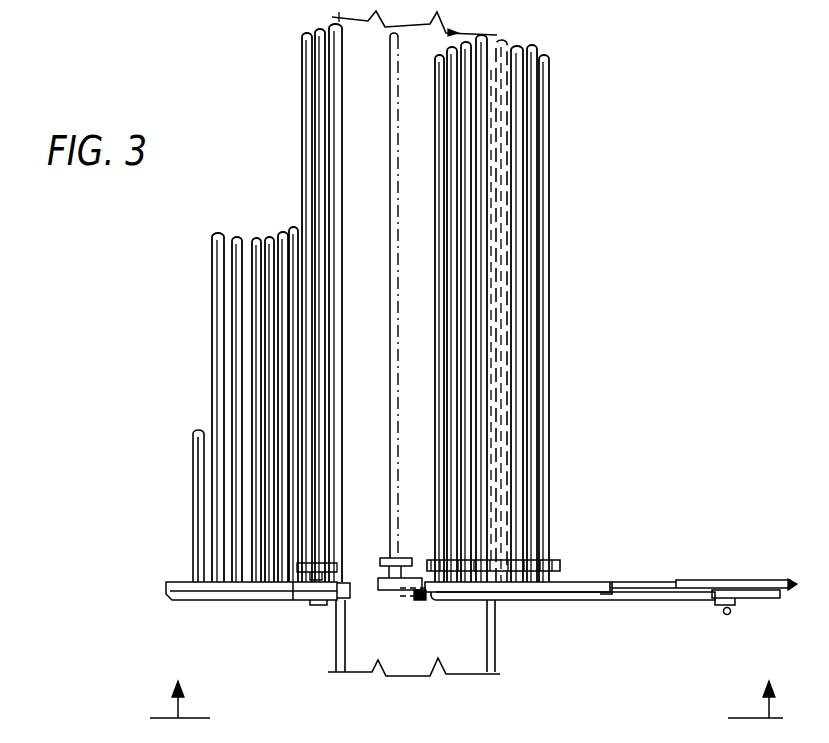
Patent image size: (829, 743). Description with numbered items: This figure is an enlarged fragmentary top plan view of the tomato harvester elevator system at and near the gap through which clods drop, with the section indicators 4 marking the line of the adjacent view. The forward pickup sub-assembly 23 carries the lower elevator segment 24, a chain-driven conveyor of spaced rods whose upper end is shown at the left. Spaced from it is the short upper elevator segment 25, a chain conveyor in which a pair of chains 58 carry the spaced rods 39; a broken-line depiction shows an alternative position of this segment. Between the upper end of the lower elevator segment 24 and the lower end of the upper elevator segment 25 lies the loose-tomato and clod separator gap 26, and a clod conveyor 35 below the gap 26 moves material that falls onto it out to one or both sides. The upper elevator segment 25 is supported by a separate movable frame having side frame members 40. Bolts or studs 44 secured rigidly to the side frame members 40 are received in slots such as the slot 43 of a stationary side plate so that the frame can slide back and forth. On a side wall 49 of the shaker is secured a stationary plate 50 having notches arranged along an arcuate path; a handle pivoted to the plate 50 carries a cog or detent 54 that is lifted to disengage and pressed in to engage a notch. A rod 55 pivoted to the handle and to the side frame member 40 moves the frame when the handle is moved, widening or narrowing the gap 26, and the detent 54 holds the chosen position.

The section line 4- 4 is at (466, 688).
The forward pickup sub-assembly 23 is at (273, 600).
The lower elevator segment 24 is at (216, 354).
The upper elevator segment 25 is at (525, 308).
The loose-tomato and clod separator gap 26 is at (382, 136).
The clod conveyor 35 is at (425, 655).
The spaced rods 39 is at (470, 302).
The side frame members 40 is at (577, 583).
The slot 43 is at (438, 432).
The bolt or stud 44 is at (498, 440).
The side wall 49 is at (725, 580).
The stationary plate 50 is at (764, 598).
The cog or detent 54 is at (727, 616).
The rod 55 is at (573, 600).
The chains 58 is at (508, 562).